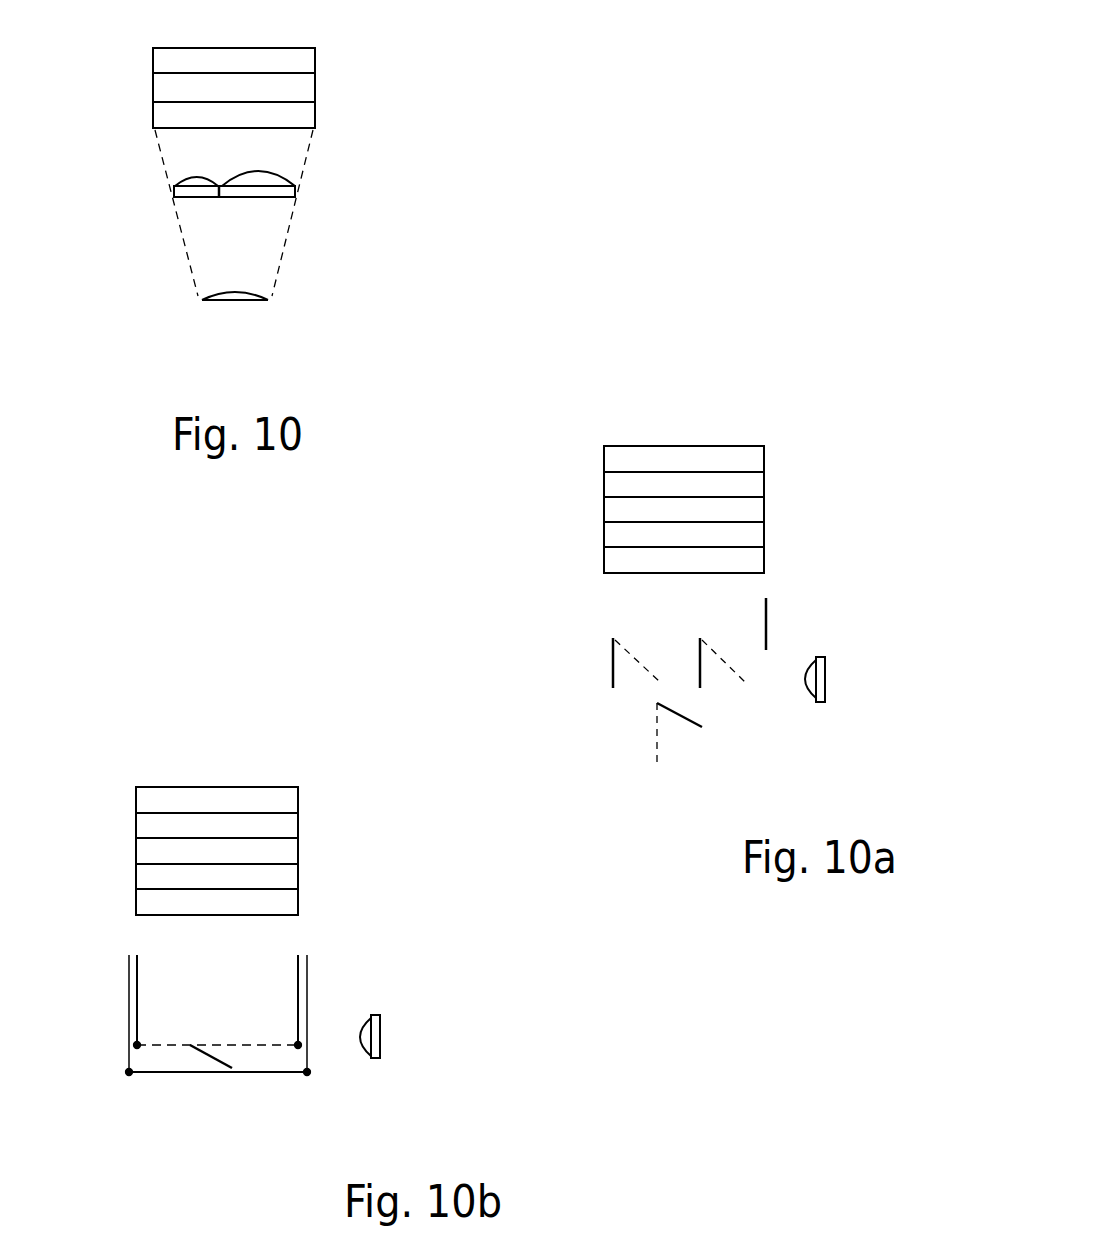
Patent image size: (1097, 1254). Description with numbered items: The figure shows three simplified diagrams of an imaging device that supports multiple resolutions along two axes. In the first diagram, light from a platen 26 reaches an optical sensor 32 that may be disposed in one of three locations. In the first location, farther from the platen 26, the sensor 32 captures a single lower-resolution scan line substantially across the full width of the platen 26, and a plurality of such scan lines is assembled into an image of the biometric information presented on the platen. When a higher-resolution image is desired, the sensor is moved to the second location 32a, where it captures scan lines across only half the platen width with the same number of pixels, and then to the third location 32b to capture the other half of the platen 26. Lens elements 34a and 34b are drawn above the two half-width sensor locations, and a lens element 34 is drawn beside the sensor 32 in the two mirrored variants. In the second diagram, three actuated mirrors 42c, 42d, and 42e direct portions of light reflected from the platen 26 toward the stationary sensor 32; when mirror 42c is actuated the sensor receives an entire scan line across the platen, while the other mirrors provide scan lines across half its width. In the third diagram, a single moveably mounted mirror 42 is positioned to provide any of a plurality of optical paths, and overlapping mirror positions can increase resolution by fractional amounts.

In FIG. 10, the platen 26 is at (307, 62).
In FIG. 10a, the platen 26 is at (764, 462).
In FIG. 10b, the platen 26 is at (299, 827).
In FIG. 10, the optical sensor 32 is at (240, 295).
In FIG. 10a, the optical sensor 32 is at (826, 683).
In FIG. 10b, the optical sensor 32 is at (378, 1035).
In FIG. 10, the second location of the optical sensor 32a is at (183, 190).
In FIG. 10, the third location of the optical sensor 32b is at (278, 190).
In FIG. 10a, the lens element 34 is at (796, 668).
In FIG. 10b, the lens element 34 is at (366, 1046).
In FIG. 10, the first lens element 34a is at (197, 182).
In FIG. 10, the second lens element 34b is at (267, 182).
In FIG. 10b, the mirror 42 is at (197, 1053).
In FIG. 10a, the mirror 42c is at (685, 715).
In FIG. 10a, the mirror 42d is at (613, 662).
In FIG. 10a, the mirror 42e is at (697, 652).